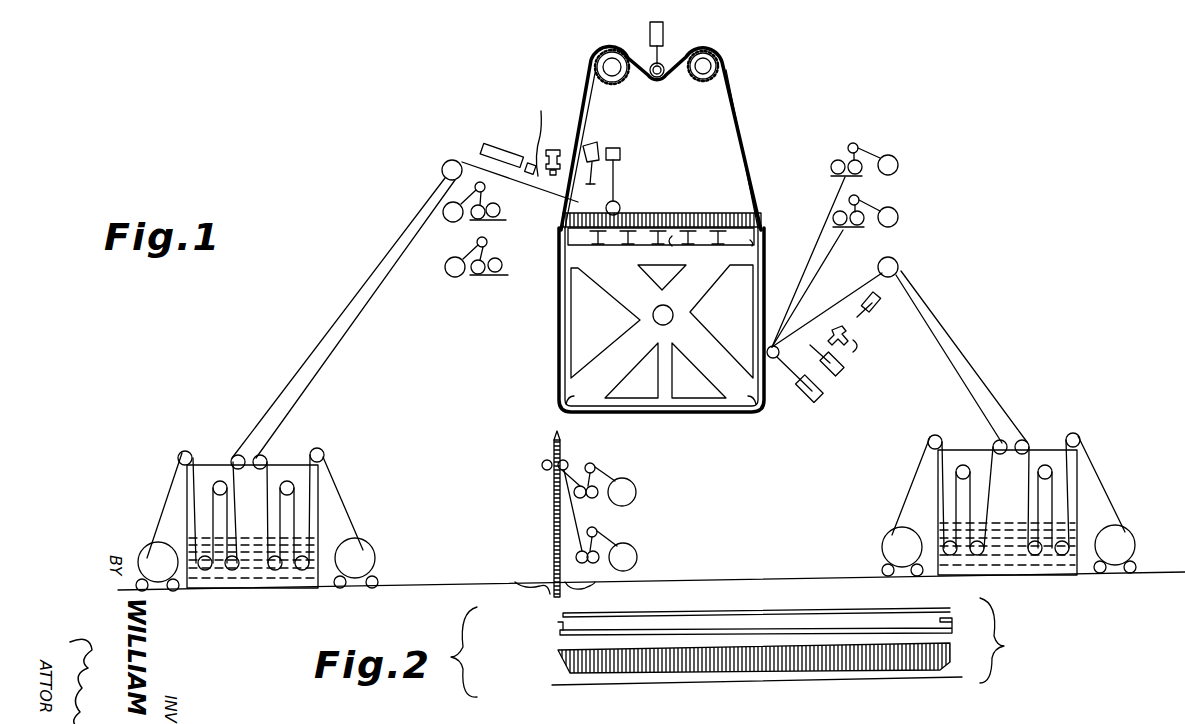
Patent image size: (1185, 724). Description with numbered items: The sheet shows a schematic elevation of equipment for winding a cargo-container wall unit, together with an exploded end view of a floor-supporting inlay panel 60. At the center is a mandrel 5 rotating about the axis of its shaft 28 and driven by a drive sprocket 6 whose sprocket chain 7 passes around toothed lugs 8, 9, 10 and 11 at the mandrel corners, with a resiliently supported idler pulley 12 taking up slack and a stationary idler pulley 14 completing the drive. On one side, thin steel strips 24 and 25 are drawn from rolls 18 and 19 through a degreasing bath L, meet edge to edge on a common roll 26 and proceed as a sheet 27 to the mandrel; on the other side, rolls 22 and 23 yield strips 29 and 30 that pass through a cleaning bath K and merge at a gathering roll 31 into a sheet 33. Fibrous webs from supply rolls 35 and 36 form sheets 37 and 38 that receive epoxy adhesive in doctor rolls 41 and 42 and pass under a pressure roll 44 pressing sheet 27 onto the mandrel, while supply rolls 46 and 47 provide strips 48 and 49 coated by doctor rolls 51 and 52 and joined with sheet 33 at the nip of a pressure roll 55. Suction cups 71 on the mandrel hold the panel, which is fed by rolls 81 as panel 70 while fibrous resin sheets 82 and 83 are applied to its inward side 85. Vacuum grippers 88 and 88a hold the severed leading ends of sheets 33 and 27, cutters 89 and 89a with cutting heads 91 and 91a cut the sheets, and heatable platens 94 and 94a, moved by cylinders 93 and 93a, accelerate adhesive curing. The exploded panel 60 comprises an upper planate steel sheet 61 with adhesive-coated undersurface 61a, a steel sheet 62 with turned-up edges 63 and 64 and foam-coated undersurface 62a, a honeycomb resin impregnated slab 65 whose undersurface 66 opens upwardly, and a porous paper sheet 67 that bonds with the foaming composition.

In FIG. 1, the mandrel 5 is at (689, 412).
In FIG. 1, the drive sprocket 6 is at (619, 83).
In FIG. 1, the sprocket chain 7 is at (744, 137).
In FIG. 1, the lug 8 is at (577, 395).
In FIG. 1, the lug 9 is at (748, 392).
In FIG. 1, the lug 10 is at (753, 239).
In FIG. 1, the lug 11 is at (568, 242).
In FIG. 1, the resiliently supported idler pulley 12 is at (664, 62).
In FIG. 1, the stationary idler pulley 14 is at (699, 80).
In FIG. 1, the roll 18 is at (882, 542).
In FIG. 1, the roll 19 is at (1126, 539).
In FIG. 1, the roll 22 is at (138, 554).
In FIG. 1, the roll 23 is at (374, 546).
In FIG. 1, the strip 24 is at (956, 371).
In FIG. 1, the strip 25 is at (966, 344).
In FIG. 1, the common roll 26 is at (894, 264).
In FIG. 1, the sheet 27 is at (826, 298).
In FIG. 1, the shaft 28 is at (653, 317).
In FIG. 1, the strip 29 is at (321, 307).
In FIG. 1, the strip 30 is at (343, 321).
In FIG. 1, the gathering roll 31 is at (450, 162).
In FIG. 1, the sheet 33 is at (462, 161).
In FIG. 1, the supply roll 35 is at (896, 161).
In FIG. 1, the supply roll 36 is at (898, 216).
In FIG. 1, the sheet 37 is at (858, 143).
In FIG. 1, the sheet 38 is at (872, 200).
In FIG. 1, the doctor rolls 41 is at (838, 174).
In FIG. 1, the doctor rolls 42 is at (849, 226).
In FIG. 1, the pressure roll 44 is at (777, 351).
In FIG. 1, the supply roll 46 is at (445, 216).
In FIG. 1, the supply roll 47 is at (448, 276).
In FIG. 1, the strip 48 is at (459, 194).
In FIG. 1, the strip 49 is at (476, 246).
In FIG. 1, the doctor rolls 51 is at (489, 200).
In FIG. 1, the doctor rolls 52 is at (478, 275).
In FIG. 1, the pressure roll 55 is at (620, 206).
In FIG. 2, the floor-supporting inlay panel 60 is at (741, 645).
In FIG. 1, the upper planate steel sheet 61 is at (677, 239).
In FIG. 2, the upper planate steel sheet 61 is at (559, 613).
In FIG. 2, the undersurface of upper sheet 61a is at (597, 620).
In FIG. 2, the steel sheet 62 is at (789, 630).
In FIG. 2, the undersurface of sheet 62 62a is at (646, 635).
In FIG. 2, the turned-up edge 63 is at (948, 620).
In FIG. 2, the turned-up edge 64 is at (562, 627).
In FIG. 2, the honeycomb resin impregnated slab 65 is at (700, 655).
In FIG. 2, the undersurface of slab 66 is at (742, 648).
In FIG. 2, the porous paper sheet 67 is at (879, 679).
In FIG. 1, the panel 70 is at (545, 452).
In FIG. 1, the suction cups 71 is at (624, 240).
In FIG. 1, the rolls 81 is at (542, 465).
In FIG. 1, the fibrous web and resin sheet 82 is at (610, 472).
In FIG. 1, the fibrous web and resin sheet 83 is at (618, 540).
In FIG. 1, the side of panel 85 is at (560, 446).
In FIG. 1, the vacuum gripper 88 is at (510, 158).
In FIG. 1, the vacuum gripper 88a is at (871, 309).
In FIG. 1, the cutter 89 is at (553, 148).
In FIG. 1, the cutter 89a is at (858, 353).
In FIG. 1, the cutting head 91 is at (545, 132).
In FIG. 1, the cutting head 91a is at (852, 334).
In FIG. 1, the fluid cylinder 93 is at (598, 141).
In FIG. 1, the cylinder 93a is at (833, 391).
In FIG. 1, the heatable bar or platen 94 is at (614, 162).
In FIG. 1, the platen 94a is at (815, 340).
In FIG. 1, the cleaning bath K is at (263, 530).
In FIG. 1, the bath L is at (978, 520).